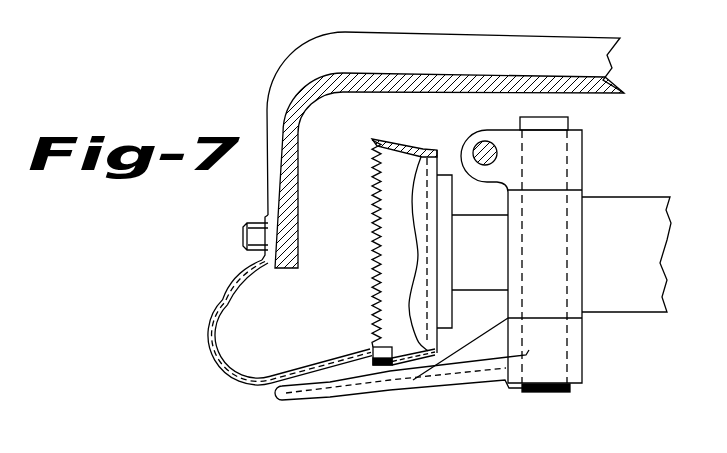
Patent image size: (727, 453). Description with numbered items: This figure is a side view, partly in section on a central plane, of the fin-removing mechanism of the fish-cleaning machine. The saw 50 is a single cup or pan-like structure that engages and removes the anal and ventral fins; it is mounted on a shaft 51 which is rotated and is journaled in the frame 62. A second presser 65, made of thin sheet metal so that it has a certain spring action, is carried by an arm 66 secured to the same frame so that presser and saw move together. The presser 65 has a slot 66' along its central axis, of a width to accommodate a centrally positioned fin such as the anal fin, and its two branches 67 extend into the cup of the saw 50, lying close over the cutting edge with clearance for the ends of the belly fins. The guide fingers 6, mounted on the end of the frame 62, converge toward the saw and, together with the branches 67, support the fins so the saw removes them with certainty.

The arm 66 is at (433, 150).
The presser 65 is at (232, 367).
The slot 66' is at (290, 339).
The branches of presser 67 is at (352, 352).
The saw 50 is at (406, 141).
The shaft 51 is at (480, 252).
The frame 62 is at (626, 254).
The guide fingers 6 is at (317, 398).